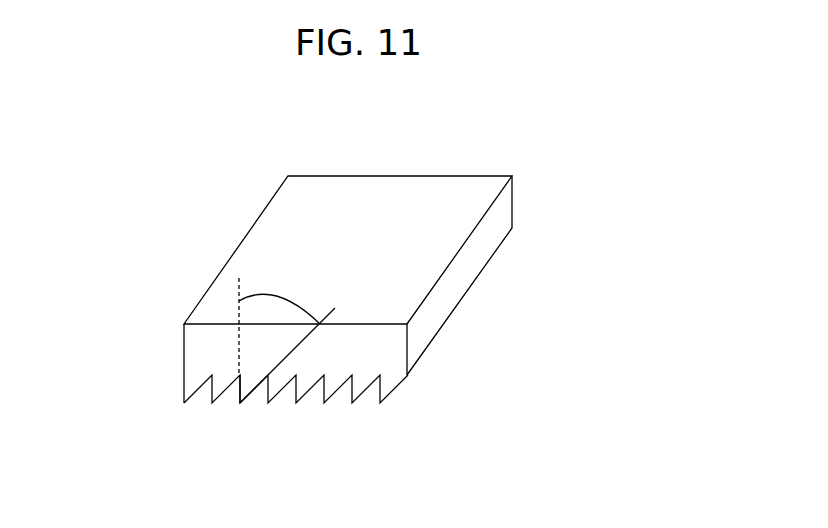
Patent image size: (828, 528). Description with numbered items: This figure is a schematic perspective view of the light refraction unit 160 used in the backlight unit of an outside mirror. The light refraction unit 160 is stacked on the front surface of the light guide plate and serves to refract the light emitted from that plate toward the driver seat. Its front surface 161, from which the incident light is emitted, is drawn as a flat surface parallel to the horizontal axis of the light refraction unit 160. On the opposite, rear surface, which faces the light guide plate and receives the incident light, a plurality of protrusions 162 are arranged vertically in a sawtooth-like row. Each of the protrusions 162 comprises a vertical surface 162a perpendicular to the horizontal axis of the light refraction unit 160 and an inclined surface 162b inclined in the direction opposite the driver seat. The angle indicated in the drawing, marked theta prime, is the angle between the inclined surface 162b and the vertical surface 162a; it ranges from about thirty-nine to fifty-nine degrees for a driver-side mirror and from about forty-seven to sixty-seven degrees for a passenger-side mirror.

The light refraction unit 160 is at (506, 153).
The front surface 161 is at (272, 228).
The protrusions 162 is at (336, 388).
The vertical surface 162a is at (238, 394).
The inclined surface 162b is at (253, 391).